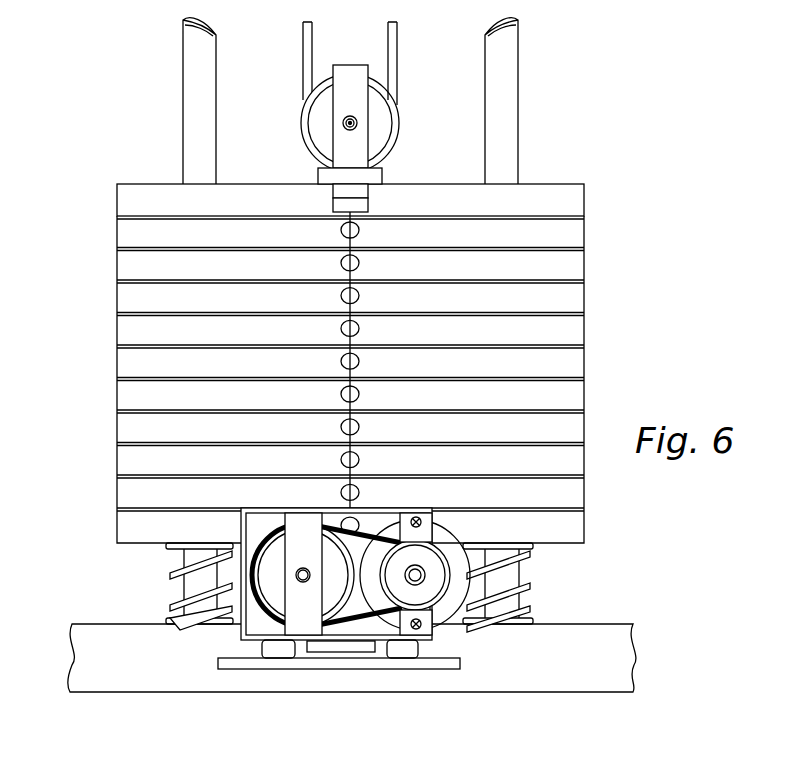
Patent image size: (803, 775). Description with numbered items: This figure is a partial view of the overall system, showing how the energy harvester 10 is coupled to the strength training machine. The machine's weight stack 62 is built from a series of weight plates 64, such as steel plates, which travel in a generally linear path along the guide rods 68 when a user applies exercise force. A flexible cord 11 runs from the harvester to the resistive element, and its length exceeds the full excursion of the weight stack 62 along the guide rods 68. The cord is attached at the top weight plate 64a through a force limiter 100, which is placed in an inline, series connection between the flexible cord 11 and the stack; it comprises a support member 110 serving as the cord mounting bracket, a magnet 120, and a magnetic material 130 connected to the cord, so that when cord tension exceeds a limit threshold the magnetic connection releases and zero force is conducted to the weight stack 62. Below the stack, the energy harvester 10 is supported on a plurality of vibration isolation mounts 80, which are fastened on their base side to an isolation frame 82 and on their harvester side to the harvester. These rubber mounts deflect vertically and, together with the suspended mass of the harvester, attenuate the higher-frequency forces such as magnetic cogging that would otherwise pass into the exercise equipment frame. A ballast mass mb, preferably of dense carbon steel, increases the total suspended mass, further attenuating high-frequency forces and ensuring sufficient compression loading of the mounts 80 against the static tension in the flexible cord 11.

The energy harvester 10 is at (226, 631).
The flexible cord 11 is at (352, 373).
The weight stack 62 is at (328, 329).
The weight plates 64 is at (570, 363).
The top weight plate 64a is at (153, 183).
The guide rods 68 is at (198, 57).
The vibration isolation mounts 80 is at (278, 658).
The isolation frame 82 is at (232, 669).
The force limiter 100 is at (353, 117).
The support member 110 is at (372, 178).
The magnet 120 is at (335, 192).
The magnetic material 130 is at (335, 204).
The ballast mass mb is at (349, 652).